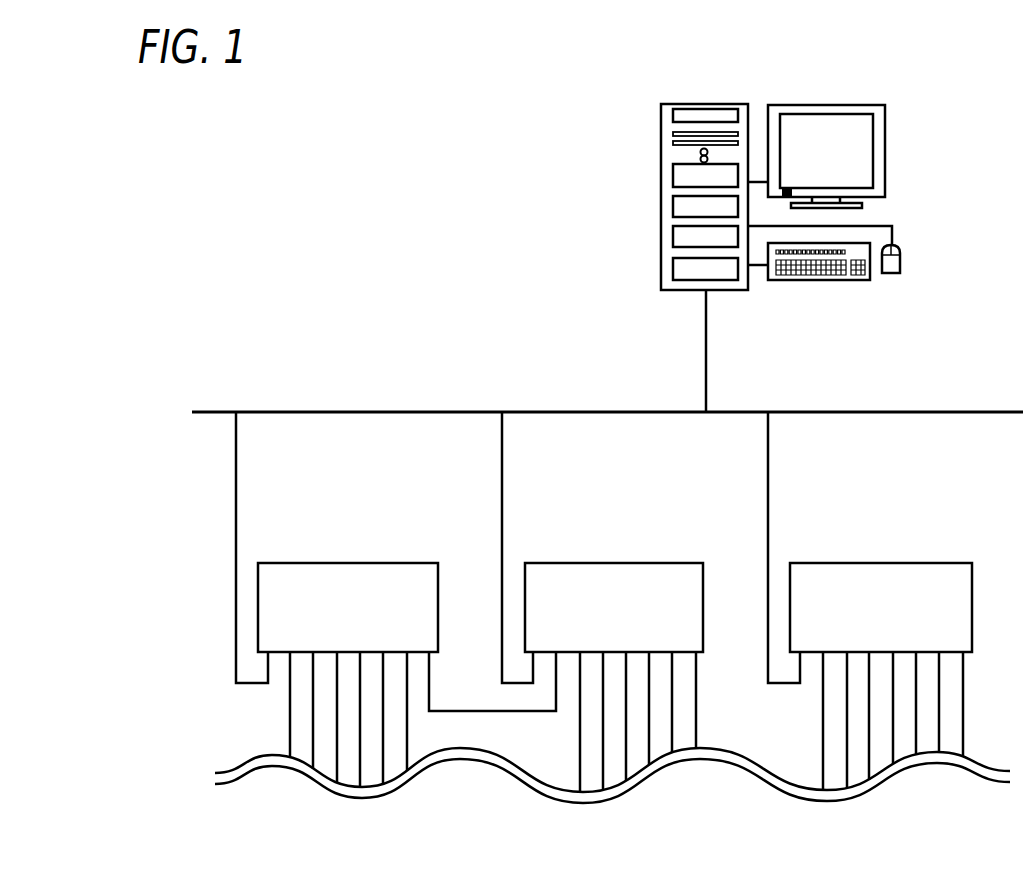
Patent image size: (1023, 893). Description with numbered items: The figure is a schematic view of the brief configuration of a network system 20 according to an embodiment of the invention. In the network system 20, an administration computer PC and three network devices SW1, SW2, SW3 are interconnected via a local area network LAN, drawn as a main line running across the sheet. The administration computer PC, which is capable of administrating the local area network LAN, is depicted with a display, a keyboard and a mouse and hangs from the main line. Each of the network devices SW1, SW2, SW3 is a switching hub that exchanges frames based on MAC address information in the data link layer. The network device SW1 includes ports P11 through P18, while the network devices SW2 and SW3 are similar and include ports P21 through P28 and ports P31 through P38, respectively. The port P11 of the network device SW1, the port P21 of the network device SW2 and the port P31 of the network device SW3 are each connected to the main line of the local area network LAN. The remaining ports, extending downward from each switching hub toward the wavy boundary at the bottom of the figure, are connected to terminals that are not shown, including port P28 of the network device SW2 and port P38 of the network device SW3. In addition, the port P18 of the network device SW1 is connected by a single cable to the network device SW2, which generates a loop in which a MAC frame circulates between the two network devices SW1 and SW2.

The network system 20 is at (375, 225).
The administration computer PC is at (927, 163).
The local area network LAN is at (987, 412).
The network device SW1 is at (397, 563).
The network device SW2 is at (662, 563).
The network device SW3 is at (928, 563).
The port P11 is at (282, 688).
The port P18 is at (412, 695).
The port P21 is at (555, 706).
The port P28 is at (678, 685).
The port P31 is at (813, 705).
The port P38 is at (946, 686).